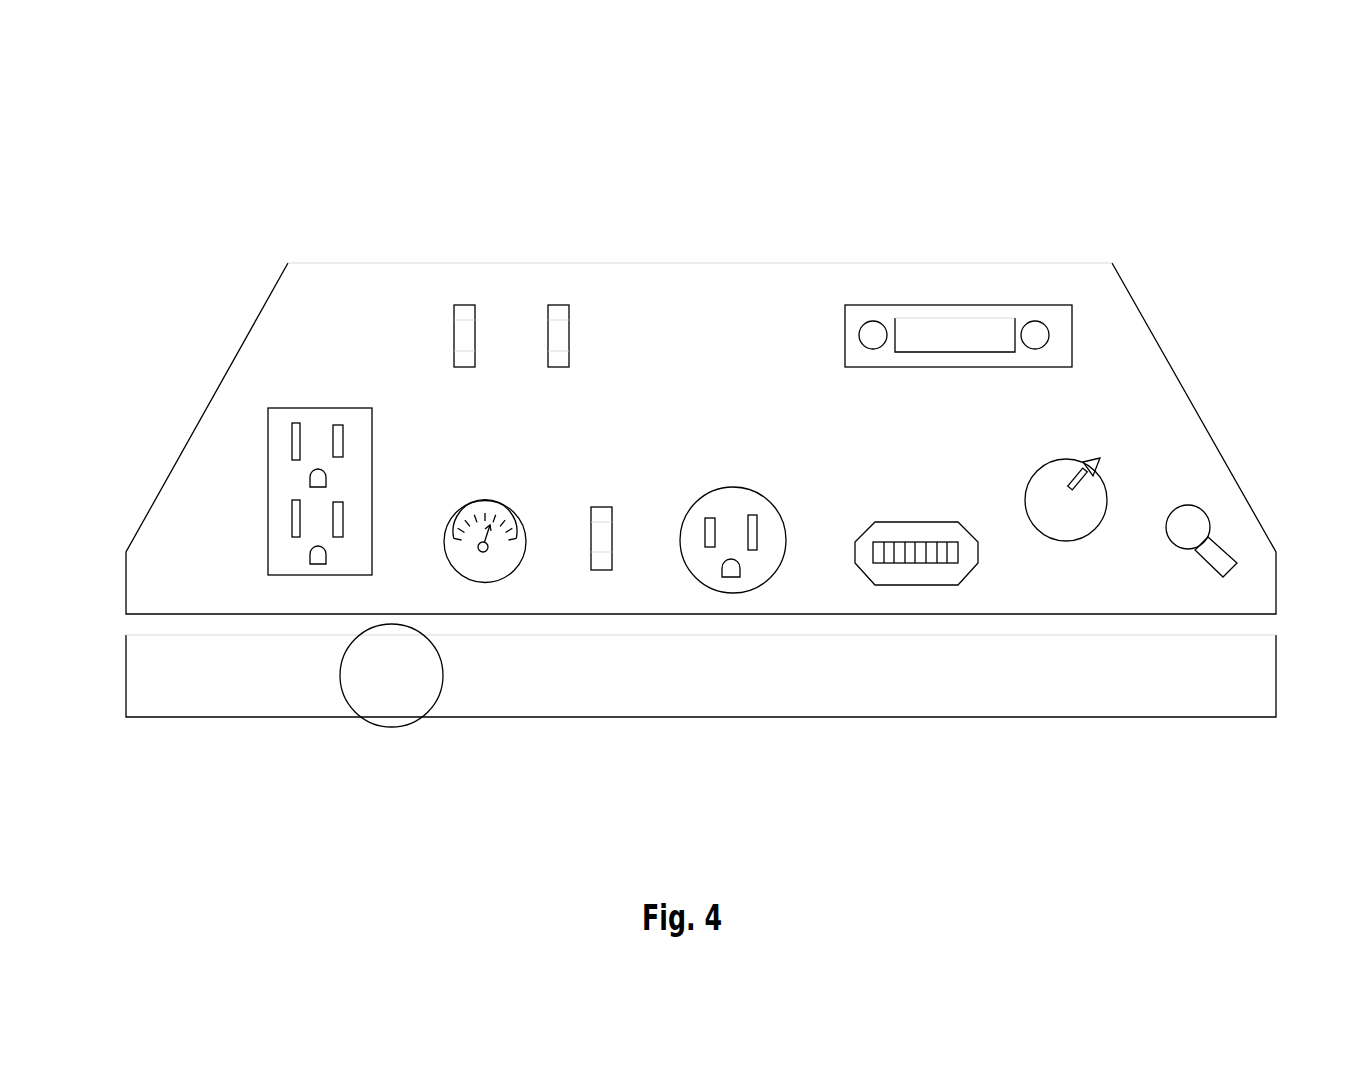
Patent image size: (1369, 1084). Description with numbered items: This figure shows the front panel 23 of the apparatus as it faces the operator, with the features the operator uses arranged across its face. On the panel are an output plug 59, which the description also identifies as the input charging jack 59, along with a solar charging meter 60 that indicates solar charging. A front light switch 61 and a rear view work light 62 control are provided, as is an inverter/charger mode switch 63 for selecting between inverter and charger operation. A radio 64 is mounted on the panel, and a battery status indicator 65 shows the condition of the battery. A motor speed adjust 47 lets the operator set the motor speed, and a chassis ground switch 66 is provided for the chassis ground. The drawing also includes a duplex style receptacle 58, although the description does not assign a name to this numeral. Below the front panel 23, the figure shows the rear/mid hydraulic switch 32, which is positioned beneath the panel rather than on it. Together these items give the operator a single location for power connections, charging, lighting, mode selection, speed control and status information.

The front panel 23 is at (743, 305).
The rear/mid hydraulic switch 32 is at (377, 697).
The motor speed adjust 47 is at (1095, 481).
The duplex receptacle 58 is at (282, 470).
The output plug 59 is at (728, 500).
The solar charging meter 60 is at (457, 546).
The front light switch 61 is at (465, 333).
The rear view work light 62 is at (553, 330).
The inverter/charger mode switch 63 is at (600, 528).
The radio 64 is at (935, 335).
The battery status indicator 65 is at (885, 530).
The chassis ground switch 66 is at (1197, 513).